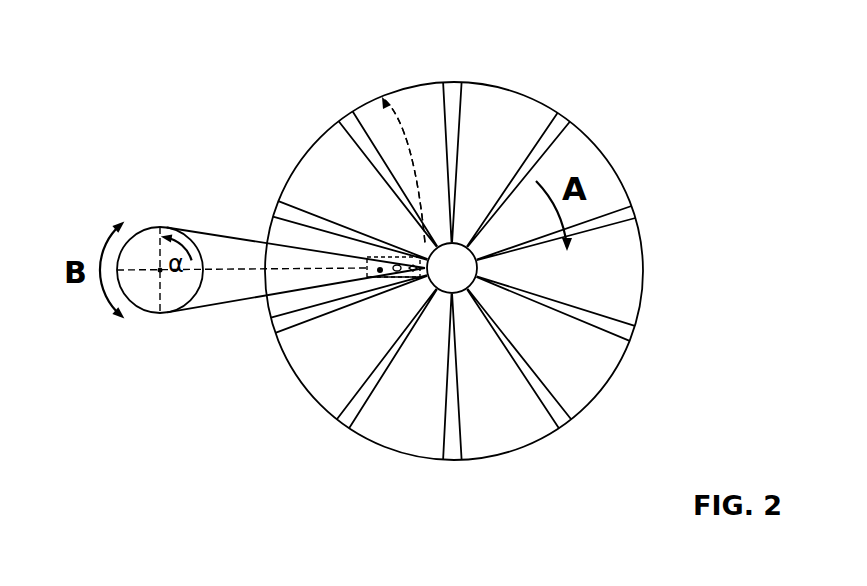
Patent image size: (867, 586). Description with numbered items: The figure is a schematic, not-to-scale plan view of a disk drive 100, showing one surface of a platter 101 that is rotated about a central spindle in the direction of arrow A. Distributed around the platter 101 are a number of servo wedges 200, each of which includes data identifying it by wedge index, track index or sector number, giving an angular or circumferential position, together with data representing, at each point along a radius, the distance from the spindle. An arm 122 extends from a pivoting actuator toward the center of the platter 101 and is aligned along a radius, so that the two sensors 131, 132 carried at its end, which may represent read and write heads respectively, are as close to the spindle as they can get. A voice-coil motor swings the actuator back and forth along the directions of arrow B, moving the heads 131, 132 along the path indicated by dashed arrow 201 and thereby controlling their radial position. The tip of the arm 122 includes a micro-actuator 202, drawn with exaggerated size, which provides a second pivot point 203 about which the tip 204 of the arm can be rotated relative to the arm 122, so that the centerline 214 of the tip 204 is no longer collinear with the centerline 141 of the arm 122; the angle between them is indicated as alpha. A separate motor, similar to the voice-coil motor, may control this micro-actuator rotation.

The disk drive 100 is at (141, 46).
The platter 101 is at (383, 97).
The arm 122 is at (193, 232).
The sensor 131 is at (413, 275).
The sensor 132 is at (386, 275).
The centerline 141 is at (217, 268).
The servo wedge 200 is at (457, 87).
The dashed arrow 201 is at (404, 130).
The micro-actuator 202 is at (367, 268).
The second pivot point 203 is at (265, 238).
The tip 204 is at (380, 257).
The centerline 214 is at (365, 277).